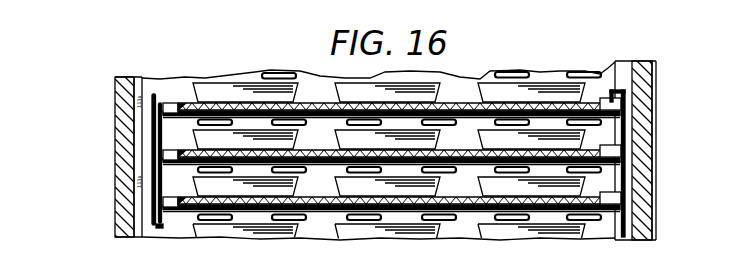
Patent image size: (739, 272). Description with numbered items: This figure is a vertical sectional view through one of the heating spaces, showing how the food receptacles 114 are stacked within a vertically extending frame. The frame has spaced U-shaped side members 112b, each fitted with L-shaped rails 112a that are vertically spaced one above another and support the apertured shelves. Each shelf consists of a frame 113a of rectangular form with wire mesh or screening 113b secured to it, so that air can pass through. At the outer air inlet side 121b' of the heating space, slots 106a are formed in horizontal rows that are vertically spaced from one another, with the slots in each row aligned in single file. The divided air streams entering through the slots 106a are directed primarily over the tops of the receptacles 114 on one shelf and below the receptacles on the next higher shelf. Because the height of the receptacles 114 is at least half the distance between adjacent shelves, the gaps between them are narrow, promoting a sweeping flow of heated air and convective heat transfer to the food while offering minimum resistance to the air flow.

The outer air inlet side 121b' is at (163, 64).
The receptacle 114 is at (670, 131).
The slot 106a is at (530, 73).
The wire mesh or screening 113b is at (602, 68).
The frame of rectangular form 113a is at (181, 103).
The L-shaped rail 112a is at (165, 153).
The U-shaped side member 112b is at (157, 185).